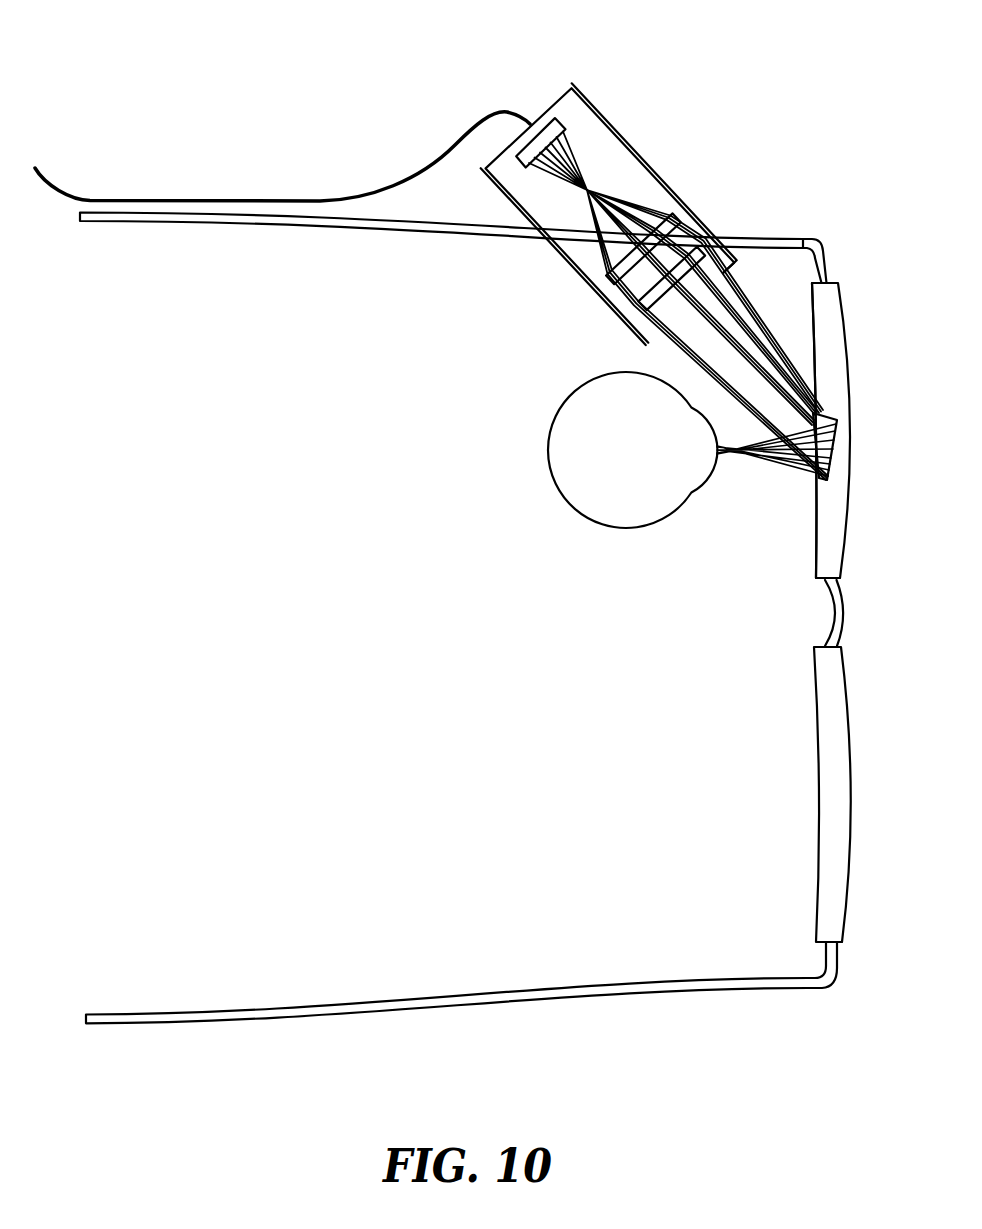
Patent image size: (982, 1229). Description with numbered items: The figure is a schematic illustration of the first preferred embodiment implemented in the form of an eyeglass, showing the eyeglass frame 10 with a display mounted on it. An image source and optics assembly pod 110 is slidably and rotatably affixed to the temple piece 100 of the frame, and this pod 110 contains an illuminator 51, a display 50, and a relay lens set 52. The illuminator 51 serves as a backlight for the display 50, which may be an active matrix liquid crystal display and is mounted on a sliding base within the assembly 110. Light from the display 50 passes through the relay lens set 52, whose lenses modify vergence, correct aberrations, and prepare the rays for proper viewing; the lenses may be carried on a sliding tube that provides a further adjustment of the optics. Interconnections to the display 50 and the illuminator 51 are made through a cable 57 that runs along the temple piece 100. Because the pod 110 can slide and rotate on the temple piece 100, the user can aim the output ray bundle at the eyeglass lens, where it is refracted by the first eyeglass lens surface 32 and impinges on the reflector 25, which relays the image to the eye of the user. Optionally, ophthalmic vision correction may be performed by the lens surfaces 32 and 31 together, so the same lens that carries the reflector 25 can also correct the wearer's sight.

The eyeglass frame 10 is at (707, 313).
The reflector 25 is at (838, 463).
The eyeglass lens surface 31 is at (848, 525).
The first eyeglass lens surface 32 is at (815, 549).
The display 50 is at (578, 147).
The illuminator 51 is at (542, 120).
The relay lens set 52 is at (688, 274).
The cable 57 is at (53, 183).
The temple piece 100 is at (180, 222).
The image source and optics assembly pod 110 is at (560, 253).